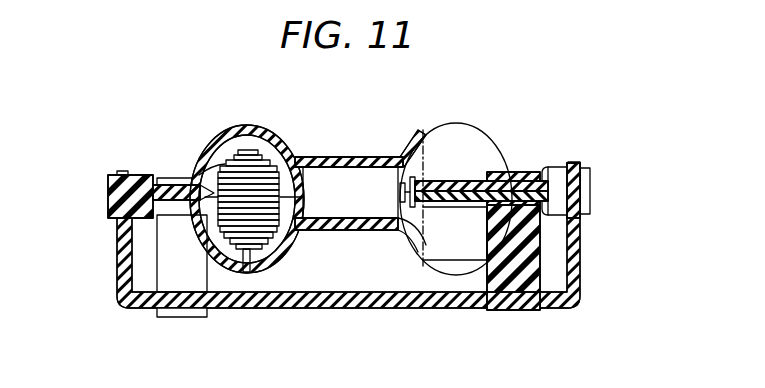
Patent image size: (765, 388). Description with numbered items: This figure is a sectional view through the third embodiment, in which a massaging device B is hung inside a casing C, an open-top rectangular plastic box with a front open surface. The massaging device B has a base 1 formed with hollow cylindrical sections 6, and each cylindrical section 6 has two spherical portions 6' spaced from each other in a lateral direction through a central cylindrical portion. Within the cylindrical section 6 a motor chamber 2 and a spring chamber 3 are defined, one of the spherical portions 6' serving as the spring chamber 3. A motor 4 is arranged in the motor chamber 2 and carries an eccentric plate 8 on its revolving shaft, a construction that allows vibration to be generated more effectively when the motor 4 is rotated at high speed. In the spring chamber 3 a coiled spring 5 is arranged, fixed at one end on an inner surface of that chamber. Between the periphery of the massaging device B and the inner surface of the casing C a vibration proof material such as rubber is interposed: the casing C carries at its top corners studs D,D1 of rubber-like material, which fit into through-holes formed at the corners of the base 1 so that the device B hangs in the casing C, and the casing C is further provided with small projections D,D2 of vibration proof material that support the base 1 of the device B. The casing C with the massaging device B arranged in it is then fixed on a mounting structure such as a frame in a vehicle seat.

The massaging device B is at (206, 140).
The casing C is at (346, 309).
The base 1 is at (168, 182).
The motor chamber 2 is at (360, 215).
The spring chamber 3 is at (236, 150).
The motor 4 is at (352, 183).
The coiled spring 5 is at (216, 180).
The hollow cylindrical section 6 is at (304, 165).
The spherical portion 6' is at (358, 178).
The eccentric plate 8 is at (408, 175).
The stud of vibration proof material D,D1 is at (168, 270).
The small projection of vibration proof material D,D2 is at (110, 203).